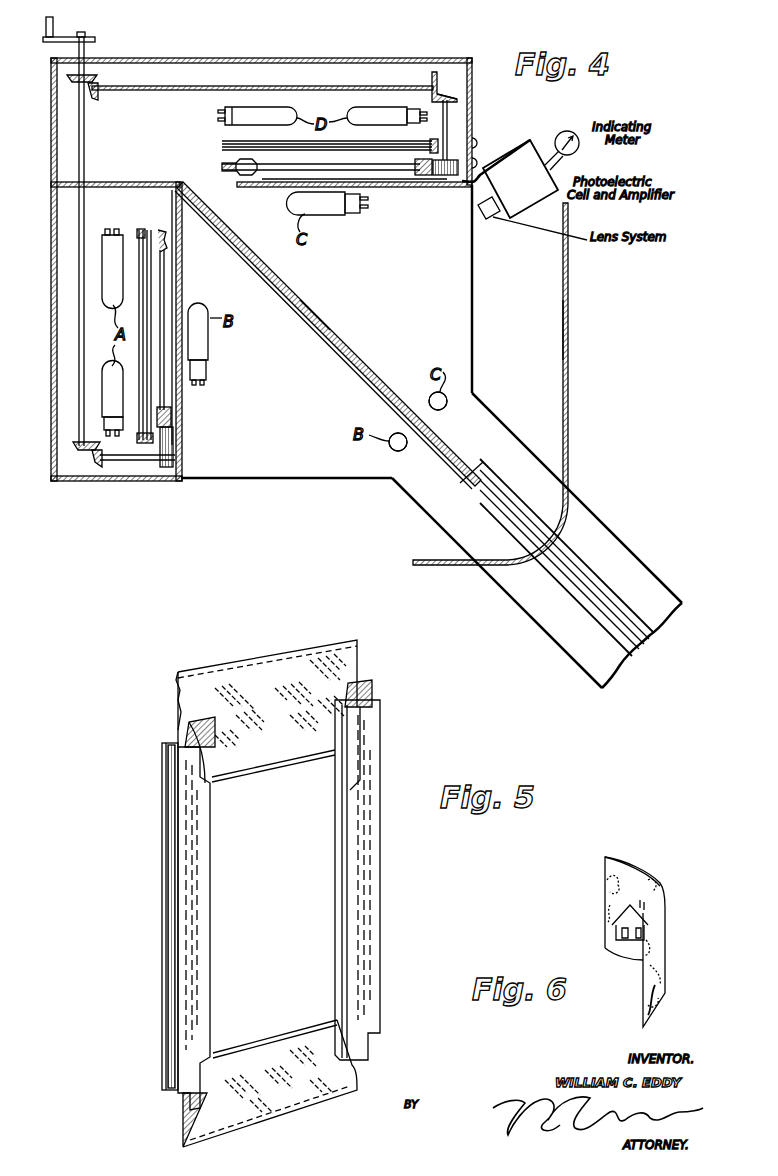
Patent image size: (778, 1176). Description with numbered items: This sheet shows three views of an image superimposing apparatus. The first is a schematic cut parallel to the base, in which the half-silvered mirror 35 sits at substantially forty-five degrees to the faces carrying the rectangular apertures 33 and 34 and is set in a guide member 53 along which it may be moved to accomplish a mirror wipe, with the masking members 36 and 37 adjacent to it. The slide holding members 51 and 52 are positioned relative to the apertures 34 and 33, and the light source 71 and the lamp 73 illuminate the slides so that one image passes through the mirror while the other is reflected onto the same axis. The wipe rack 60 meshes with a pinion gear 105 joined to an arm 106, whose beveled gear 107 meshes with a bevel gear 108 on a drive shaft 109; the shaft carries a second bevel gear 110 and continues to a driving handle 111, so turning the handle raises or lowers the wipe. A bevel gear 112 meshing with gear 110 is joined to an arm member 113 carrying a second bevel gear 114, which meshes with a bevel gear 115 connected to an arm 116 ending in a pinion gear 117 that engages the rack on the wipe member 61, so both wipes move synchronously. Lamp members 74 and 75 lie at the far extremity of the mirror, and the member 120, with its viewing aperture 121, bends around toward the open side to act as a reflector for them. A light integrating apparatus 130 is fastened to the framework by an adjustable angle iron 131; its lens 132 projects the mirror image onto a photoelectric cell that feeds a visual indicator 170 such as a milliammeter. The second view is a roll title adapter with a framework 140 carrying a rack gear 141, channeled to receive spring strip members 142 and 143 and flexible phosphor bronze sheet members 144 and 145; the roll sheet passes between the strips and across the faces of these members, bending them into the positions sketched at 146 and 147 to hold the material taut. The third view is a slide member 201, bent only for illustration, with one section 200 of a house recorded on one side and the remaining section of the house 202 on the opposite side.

In FIG. 4, the rectangular aperture 33 is at (385, 186).
In FIG. 4, the rectangularly shaped aperture 34 is at (182, 403).
In FIG. 4, the half-silvered mirror 35 is at (362, 371).
In FIG. 4, the masking member 36 is at (213, 230).
In FIG. 4, the masking member 37 is at (212, 222).
In FIG. 4, the slide holding member 51 is at (148, 461).
In FIG. 4, the slide holding member 52 is at (433, 140).
In FIG. 4, the guide member 53 is at (495, 478).
In FIG. 4, the wipe rack 60 is at (173, 435).
In FIG. 4, the wipe member 61 is at (424, 180).
In FIG. 4, the light source 71 is at (210, 347).
In FIG. 4, the lamp 73 is at (326, 214).
In FIG. 4, the lamp member 74 is at (447, 402).
In FIG. 4, the lamp member 75 is at (396, 451).
In FIG. 4, the pinion gear 105 is at (176, 480).
In FIG. 4, the arm 106 is at (118, 461).
In FIG. 4, the beveled gear 107 is at (95, 467).
In FIG. 4, the bevel gear 108 is at (72, 447).
In FIG. 4, the drive shaft 109 is at (86, 145).
In FIG. 4, the second bevel gear 110 is at (93, 75).
In FIG. 4, the driving handle 111 is at (53, 38).
In FIG. 4, the bevel gear 112 is at (100, 99).
In FIG. 4, the arm member 113 is at (266, 86).
In FIG. 4, the second bevel gear 114 is at (436, 73).
In FIG. 4, the bevel gear 115 is at (441, 95).
In FIG. 4, the arm 116 is at (450, 115).
In FIG. 4, the pinion gear 117 is at (459, 187).
In FIG. 4, the member 120 is at (567, 221).
In FIG. 4, the viewing aperture 121 is at (567, 331).
In FIG. 4, the light integrating apparatus 130 is at (542, 173).
In FIG. 4, the adjustable angle iron 131 is at (520, 140).
In FIG. 4, the lens 132 is at (489, 218).
In FIG. 4, the visual indicator 170 is at (570, 129).
In FIG. 5, the framework 140 is at (186, 910).
In FIG. 5, the rack gear 141 is at (172, 1000).
In FIG. 5, the spring strip member 142 is at (372, 693).
In FIG. 5, the spring strip member 143 is at (185, 734).
In FIG. 5, the flexible sheet member 144 is at (268, 666).
In FIG. 5, the flexible sheet member 145 is at (300, 1098).
In FIG. 5, the bent position of sheet member 146 is at (183, 1130).
In FIG. 5, the bent position of sheet member 147 is at (178, 683).
In FIG. 6, the section of a house 200 is at (628, 942).
In FIG. 6, the slide member 201 is at (640, 862).
In FIG. 6, the remaining section of the house 202 is at (659, 987).